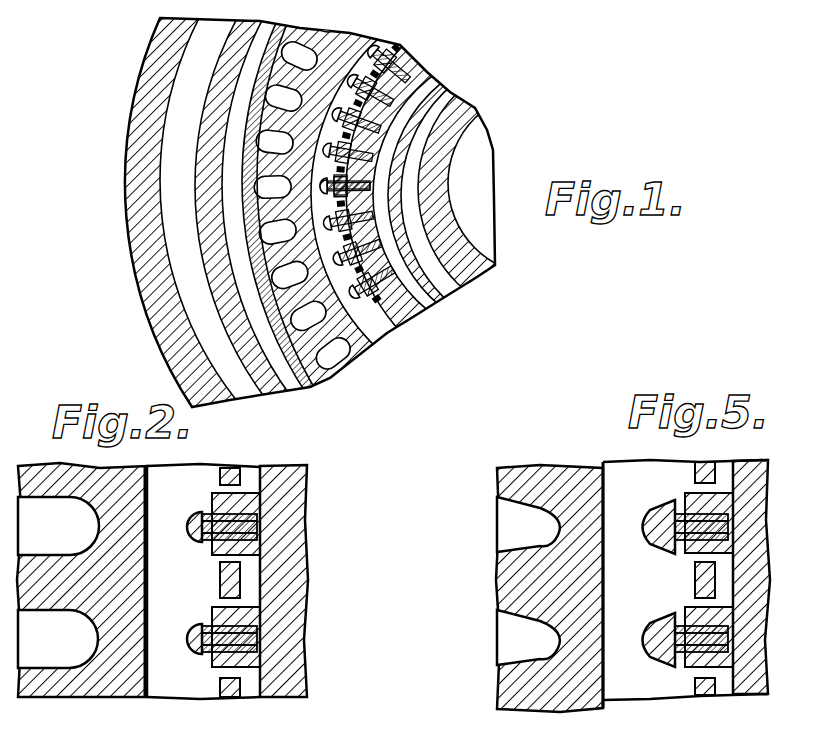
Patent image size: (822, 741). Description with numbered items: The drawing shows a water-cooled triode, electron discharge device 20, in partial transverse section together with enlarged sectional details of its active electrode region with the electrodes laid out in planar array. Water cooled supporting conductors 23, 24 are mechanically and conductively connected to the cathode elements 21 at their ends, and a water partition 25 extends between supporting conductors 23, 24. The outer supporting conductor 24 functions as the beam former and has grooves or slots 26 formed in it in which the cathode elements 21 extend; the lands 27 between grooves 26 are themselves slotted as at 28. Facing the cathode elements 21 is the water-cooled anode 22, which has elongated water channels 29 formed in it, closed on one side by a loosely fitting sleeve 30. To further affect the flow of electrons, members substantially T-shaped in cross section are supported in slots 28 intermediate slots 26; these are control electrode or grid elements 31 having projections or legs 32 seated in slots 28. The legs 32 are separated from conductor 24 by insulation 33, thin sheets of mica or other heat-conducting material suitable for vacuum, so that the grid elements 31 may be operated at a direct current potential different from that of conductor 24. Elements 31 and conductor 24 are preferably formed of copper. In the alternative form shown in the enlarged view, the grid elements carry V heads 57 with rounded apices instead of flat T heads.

In FIG. 1, the electron discharge device 20 is at (506, 248).
In FIG. 1, the cathode elements 21 is at (376, 352).
In FIG. 2, the cathode elements 21 is at (220, 695).
In FIG. 5, the cathode elements 21 is at (695, 573).
In FIG. 1, the anode 22 is at (345, 367).
In FIG. 2, the anode 22 is at (82, 597).
In FIG. 5, the anode 22 is at (505, 573).
In FIG. 1, the supporting conductor 23 is at (477, 273).
In FIG. 1, the outer supporting conductor 24 is at (420, 327).
In FIG. 2, the outer supporting conductor 24 is at (281, 601).
In FIG. 5, the outer supporting conductor 24 is at (750, 692).
In FIG. 1, the water partition 25 is at (440, 300).
In FIG. 2, the grooves or slots 26 is at (253, 690).
In FIG. 2, the lands 27 is at (210, 529).
In FIG. 2, the slots 28 is at (262, 607).
In FIG. 2, the water channels 29 is at (62, 652).
In FIG. 1, the sleeve 30 is at (300, 380).
In FIG. 1, the control electrode or grid elements 31 is at (365, 305).
In FIG. 2, the control electrode or grid elements 31 is at (203, 640).
In FIG. 2, the projections or legs 32 is at (195, 512).
In FIG. 2, the insulation 33 is at (208, 660).
In FIG. 5, the insulation 33 is at (680, 660).
In FIG. 5, the V heads 57 is at (674, 598).